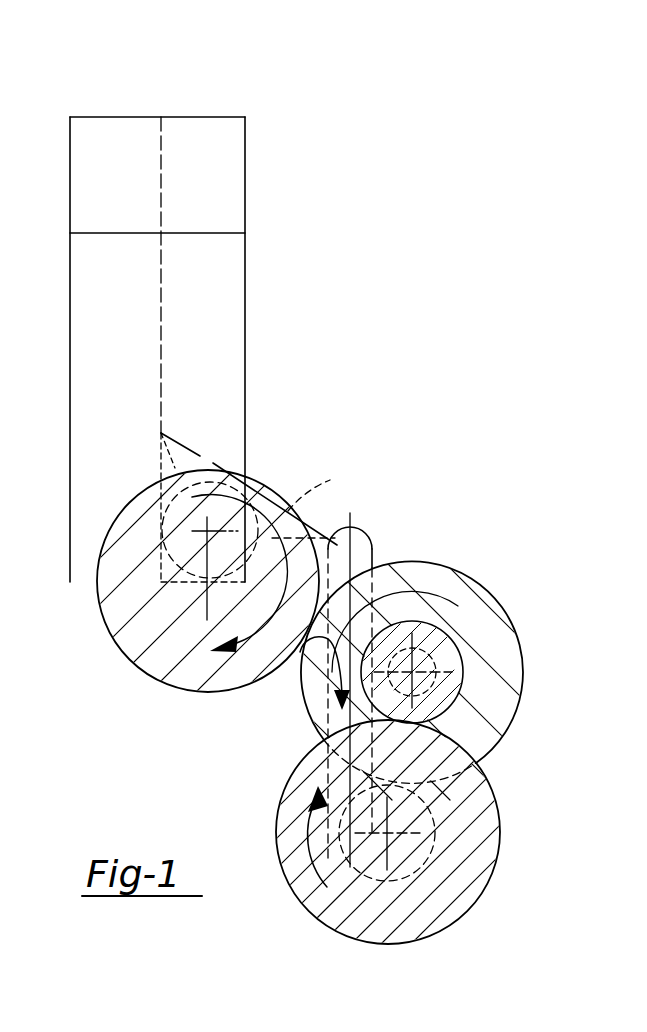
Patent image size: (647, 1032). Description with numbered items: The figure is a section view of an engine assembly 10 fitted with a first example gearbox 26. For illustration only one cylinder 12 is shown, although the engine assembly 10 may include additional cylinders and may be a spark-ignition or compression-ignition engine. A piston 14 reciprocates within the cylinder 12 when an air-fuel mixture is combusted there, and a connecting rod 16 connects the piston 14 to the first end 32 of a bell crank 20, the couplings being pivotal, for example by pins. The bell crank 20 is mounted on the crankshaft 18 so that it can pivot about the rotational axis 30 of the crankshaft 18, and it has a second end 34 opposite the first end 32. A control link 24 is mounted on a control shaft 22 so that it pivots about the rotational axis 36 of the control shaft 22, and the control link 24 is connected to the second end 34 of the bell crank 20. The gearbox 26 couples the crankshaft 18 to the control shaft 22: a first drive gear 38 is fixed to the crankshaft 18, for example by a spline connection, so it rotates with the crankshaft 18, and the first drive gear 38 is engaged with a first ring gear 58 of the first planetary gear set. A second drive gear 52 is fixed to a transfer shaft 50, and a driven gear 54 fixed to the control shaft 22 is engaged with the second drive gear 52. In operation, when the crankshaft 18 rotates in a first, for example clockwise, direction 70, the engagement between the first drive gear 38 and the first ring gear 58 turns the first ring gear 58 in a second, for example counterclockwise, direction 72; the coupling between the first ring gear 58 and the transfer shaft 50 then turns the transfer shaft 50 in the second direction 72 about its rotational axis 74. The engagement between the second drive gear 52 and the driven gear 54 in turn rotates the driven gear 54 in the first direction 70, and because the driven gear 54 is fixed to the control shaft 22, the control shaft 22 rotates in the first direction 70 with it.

The engine assembly 10 is at (94, 100).
The cylinder 12 is at (245, 280).
The piston 14 is at (197, 233).
The connecting rod 16 is at (161, 355).
The crankshaft 18 is at (330, 480).
The bell crank 20 is at (200, 453).
The control shaft 22 is at (440, 835).
The control link 24 is at (372, 551).
The gearbox 26 is at (530, 566).
The rotational axis 30 is at (203, 530).
The first end 32 is at (161, 433).
The second end 34 is at (356, 525).
The rotational axis 36 is at (388, 834).
The first drive gear 38 is at (96, 626).
The transfer shaft 50 is at (425, 622).
The second drive gear 52 is at (452, 703).
The driven gear 54 is at (493, 782).
The first ring gear 58 is at (503, 611).
The first direction 70 is at (262, 628).
The second direction 72 is at (300, 652).
The rotational axis 74 is at (465, 660).